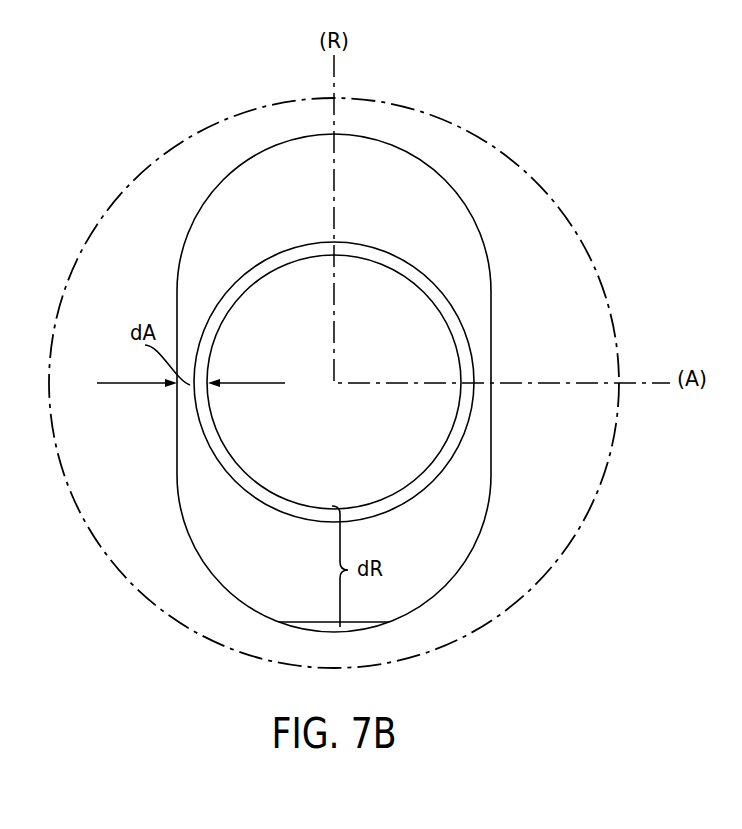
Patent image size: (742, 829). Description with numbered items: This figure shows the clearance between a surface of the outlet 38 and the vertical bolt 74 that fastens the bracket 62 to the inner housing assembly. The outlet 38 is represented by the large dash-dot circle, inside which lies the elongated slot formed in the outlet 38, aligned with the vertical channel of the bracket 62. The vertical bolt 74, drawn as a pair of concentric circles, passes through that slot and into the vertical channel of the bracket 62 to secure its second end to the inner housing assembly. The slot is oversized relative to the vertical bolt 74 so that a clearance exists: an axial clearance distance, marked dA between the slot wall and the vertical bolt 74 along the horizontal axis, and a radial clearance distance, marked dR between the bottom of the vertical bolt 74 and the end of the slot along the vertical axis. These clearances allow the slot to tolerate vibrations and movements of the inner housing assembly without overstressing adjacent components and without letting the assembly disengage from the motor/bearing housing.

The outlet 38 is at (175, 172).
The bracket 62 is at (250, 564).
The vertical bolt 74 is at (416, 335).